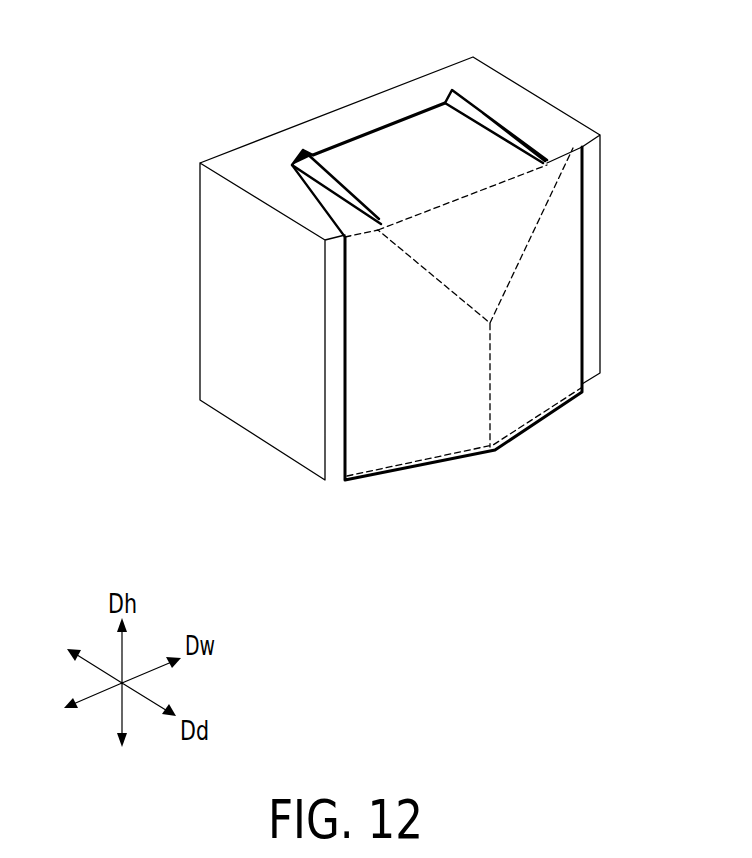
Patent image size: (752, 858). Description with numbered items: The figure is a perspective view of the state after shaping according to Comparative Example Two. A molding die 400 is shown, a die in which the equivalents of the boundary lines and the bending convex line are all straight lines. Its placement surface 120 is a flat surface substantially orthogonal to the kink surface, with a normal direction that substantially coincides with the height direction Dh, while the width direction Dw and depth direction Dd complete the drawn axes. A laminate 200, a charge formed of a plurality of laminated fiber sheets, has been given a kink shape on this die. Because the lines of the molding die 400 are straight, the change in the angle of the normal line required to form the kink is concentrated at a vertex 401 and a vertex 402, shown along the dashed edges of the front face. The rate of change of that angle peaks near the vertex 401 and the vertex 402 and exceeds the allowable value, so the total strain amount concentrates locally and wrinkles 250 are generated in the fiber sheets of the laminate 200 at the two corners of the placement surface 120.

The placement surface 120 is at (364, 118).
The laminate 200 is at (543, 126).
The wrinkles 250 is at (303, 150).
The molding die 400 is at (196, 238).
The vertex 401 is at (378, 230).
The vertex 402 is at (567, 160).